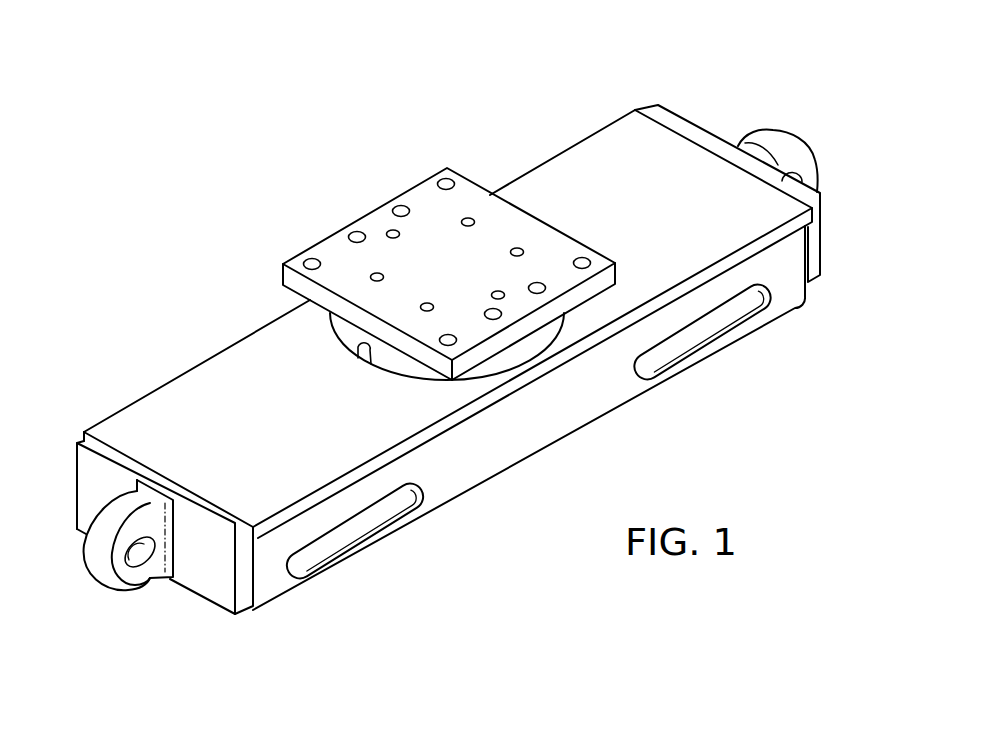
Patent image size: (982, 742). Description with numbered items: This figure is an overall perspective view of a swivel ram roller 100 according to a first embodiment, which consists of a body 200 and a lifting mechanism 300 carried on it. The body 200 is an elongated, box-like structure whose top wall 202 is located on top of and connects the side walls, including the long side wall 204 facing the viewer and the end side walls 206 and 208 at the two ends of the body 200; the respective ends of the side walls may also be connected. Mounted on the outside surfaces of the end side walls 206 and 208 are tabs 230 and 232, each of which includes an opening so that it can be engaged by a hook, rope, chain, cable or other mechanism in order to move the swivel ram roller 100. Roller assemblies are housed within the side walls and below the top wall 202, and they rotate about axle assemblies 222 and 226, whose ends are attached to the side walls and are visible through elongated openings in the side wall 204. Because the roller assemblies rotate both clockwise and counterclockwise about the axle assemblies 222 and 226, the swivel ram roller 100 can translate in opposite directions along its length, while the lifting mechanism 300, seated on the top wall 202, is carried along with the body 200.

The swivel ram roller 100 is at (259, 109).
The body 200 is at (617, 99).
The top wall 202 is at (588, 153).
The side wall 204 is at (585, 402).
The side wall 206 is at (816, 248).
The side wall 208 is at (242, 587).
The axle assembly 222 is at (699, 332).
The axle assembly 226 is at (350, 530).
The tab 230 is at (792, 132).
The tab 232 is at (98, 566).
The lifting mechanism 300 is at (407, 173).